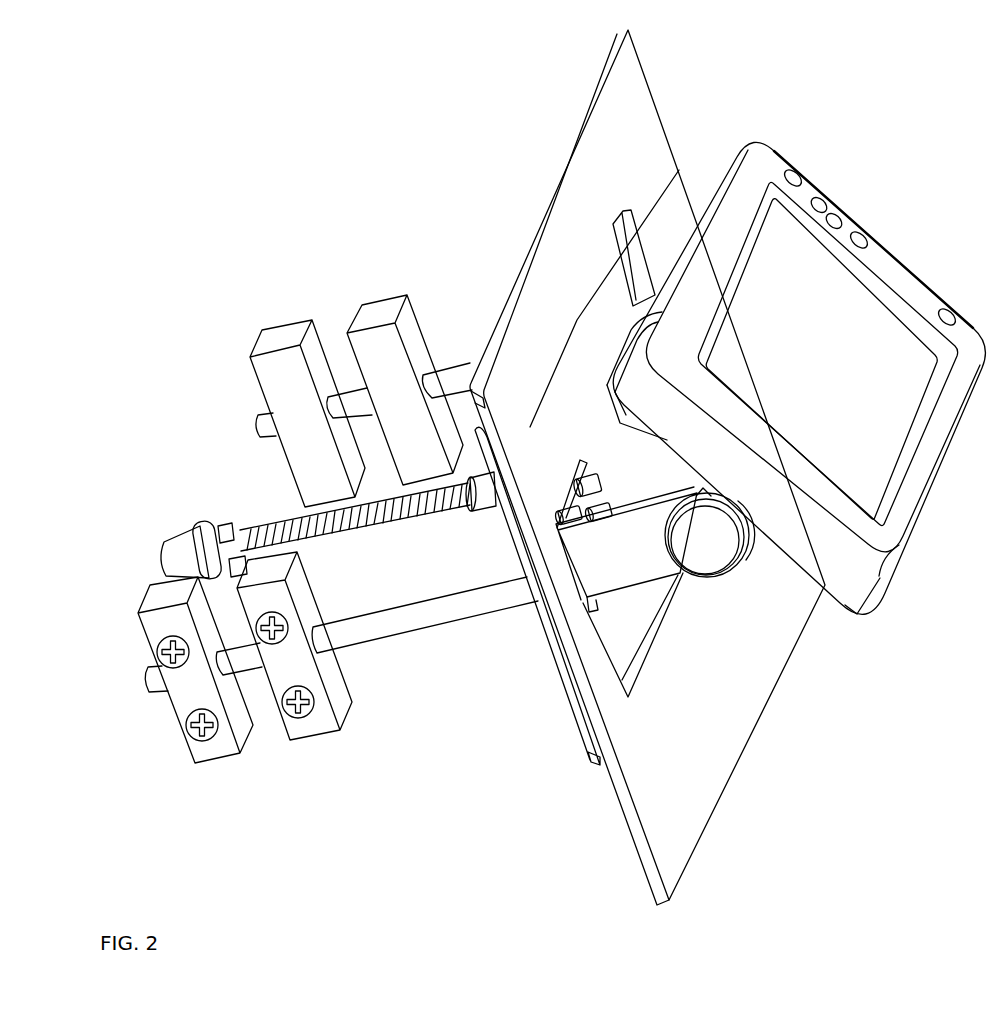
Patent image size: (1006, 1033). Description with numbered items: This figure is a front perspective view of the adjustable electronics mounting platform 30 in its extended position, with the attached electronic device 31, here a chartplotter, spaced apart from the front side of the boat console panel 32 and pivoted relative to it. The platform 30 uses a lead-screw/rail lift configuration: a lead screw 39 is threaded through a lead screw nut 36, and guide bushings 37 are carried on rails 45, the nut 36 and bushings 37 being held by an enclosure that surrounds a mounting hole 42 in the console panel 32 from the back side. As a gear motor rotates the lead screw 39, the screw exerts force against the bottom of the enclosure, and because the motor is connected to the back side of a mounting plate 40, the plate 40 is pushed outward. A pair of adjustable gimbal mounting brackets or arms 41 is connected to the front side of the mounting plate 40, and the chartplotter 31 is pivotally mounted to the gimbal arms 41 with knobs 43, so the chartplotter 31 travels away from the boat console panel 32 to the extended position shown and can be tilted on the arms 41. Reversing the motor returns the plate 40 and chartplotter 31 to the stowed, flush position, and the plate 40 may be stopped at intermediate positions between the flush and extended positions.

The adjustable electronics mounting platform 30 is at (321, 291).
The electronic device 31 is at (922, 282).
The boat console panel 32 is at (677, 835).
The lead screw nut 36 is at (178, 533).
The guide bushings 37 is at (213, 755).
The lead screw 39 is at (420, 510).
The mounting plate 40 is at (573, 720).
The gimbal mounting brackets or arms 41 is at (622, 562).
The mounting hole 42 is at (611, 291).
The knobs 43 is at (737, 560).
The rails 45 is at (432, 636).